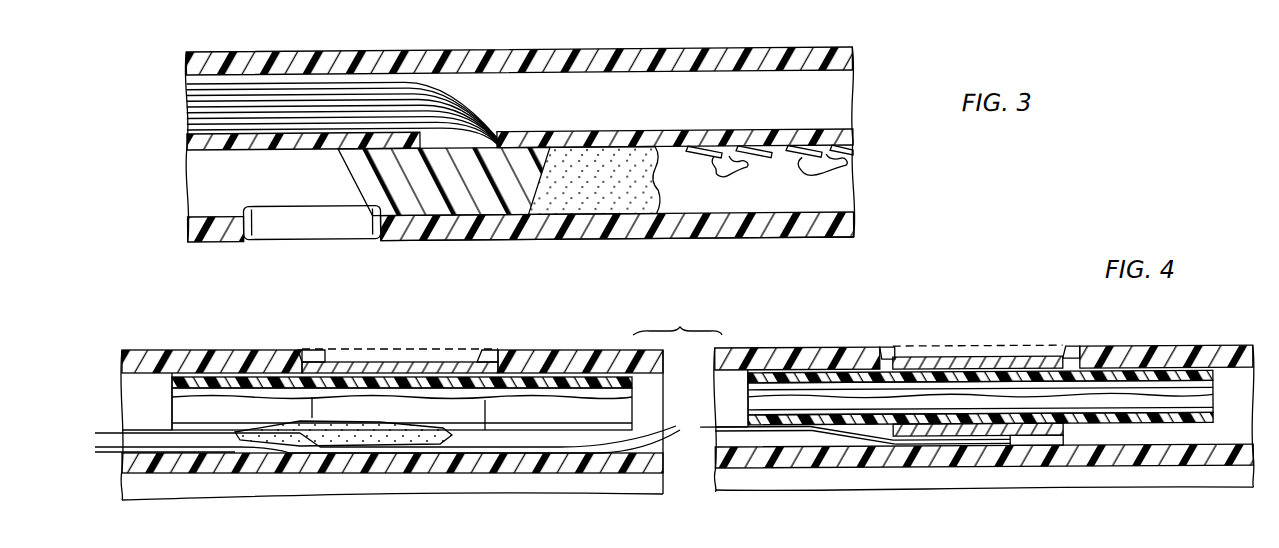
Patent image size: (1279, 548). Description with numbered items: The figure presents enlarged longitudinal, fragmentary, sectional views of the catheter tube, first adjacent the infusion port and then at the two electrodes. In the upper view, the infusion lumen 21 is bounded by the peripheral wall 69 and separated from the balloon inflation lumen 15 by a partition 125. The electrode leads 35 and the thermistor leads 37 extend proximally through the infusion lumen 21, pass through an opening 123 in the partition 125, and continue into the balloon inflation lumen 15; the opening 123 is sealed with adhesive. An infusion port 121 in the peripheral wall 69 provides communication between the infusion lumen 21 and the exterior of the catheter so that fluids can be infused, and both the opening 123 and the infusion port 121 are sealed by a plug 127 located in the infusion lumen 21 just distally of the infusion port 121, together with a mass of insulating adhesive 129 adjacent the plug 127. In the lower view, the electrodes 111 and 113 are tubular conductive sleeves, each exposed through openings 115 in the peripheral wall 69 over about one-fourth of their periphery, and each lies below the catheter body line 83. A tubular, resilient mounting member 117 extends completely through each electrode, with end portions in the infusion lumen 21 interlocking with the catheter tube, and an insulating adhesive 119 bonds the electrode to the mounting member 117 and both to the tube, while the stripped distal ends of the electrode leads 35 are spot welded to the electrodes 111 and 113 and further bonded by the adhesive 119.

In FIG. 3, the balloon inflation lumen 15 is at (734, 112).
In FIG. 3, the infusion lumen 21 is at (835, 200).
In FIG. 4, the infusion lumen 21 is at (143, 388).
In FIG. 3, the electrode leads 35 is at (769, 171).
In FIG. 4, the electrode leads 35 is at (104, 452).
In FIG. 3, the thermistor leads 37 is at (838, 176).
In FIG. 3, the peripheral wall 69 is at (524, 228).
In FIG. 4, the peripheral wall 69 is at (580, 350).
In FIG. 4, the catheter body line 83 is at (456, 344).
In FIG. 4, the electrode 111 is at (401, 366).
In FIG. 4, the electrode 113 is at (1022, 366).
In FIG. 4, the openings 115 is at (343, 360).
In FIG. 4, the mounting member 117 is at (232, 386).
In FIG. 4, the insulating adhesive 119 is at (277, 362).
In FIG. 3, the infusion port 121 is at (306, 225).
In FIG. 3, the opening 123 is at (486, 131).
In FIG. 3, the partition 125 is at (818, 134).
In FIG. 3, the plug 127 is at (415, 208).
In FIG. 3, the insulating adhesive 129 is at (635, 200).